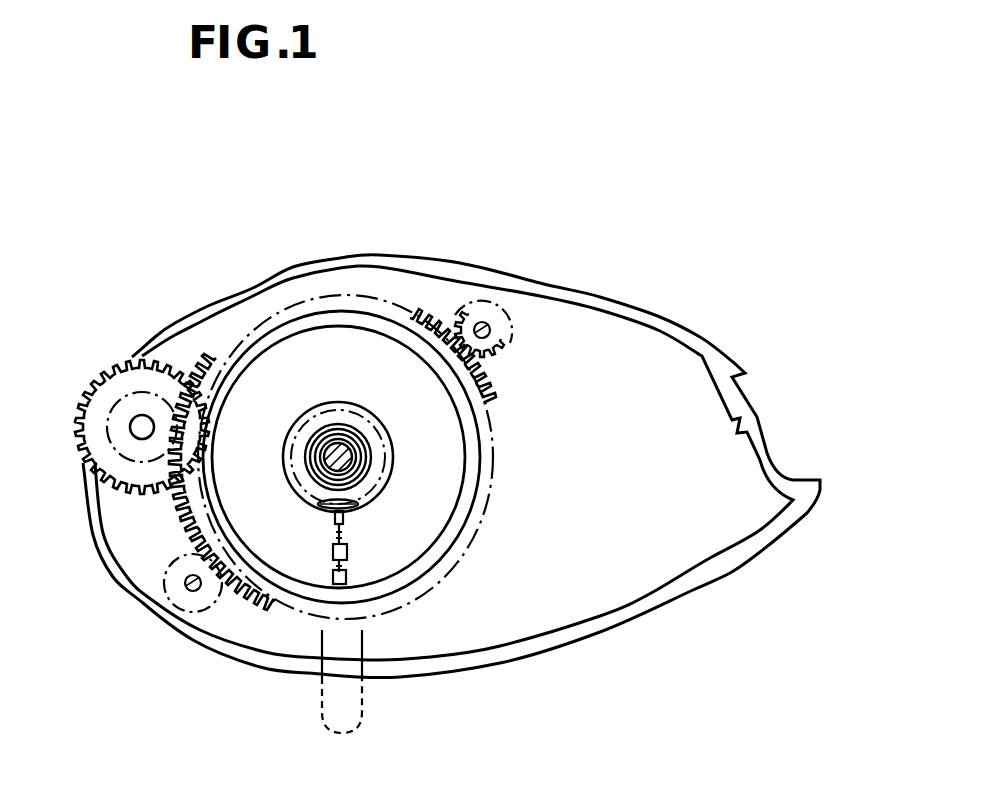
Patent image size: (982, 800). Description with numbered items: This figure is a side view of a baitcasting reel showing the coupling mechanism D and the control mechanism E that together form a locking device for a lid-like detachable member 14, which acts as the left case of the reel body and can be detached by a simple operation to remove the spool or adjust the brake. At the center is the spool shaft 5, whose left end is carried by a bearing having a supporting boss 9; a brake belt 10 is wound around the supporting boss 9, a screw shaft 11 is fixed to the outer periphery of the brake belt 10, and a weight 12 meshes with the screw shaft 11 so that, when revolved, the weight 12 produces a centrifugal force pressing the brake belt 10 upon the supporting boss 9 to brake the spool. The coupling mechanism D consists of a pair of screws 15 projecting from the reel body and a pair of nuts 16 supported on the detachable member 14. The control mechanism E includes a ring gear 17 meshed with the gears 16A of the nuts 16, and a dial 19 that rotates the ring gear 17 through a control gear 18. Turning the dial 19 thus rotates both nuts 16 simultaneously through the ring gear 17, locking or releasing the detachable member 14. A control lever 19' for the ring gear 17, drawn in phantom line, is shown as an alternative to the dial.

The detachable member 14 is at (635, 303).
The control mechanism E is at (198, 343).
The ring gear 17 is at (337, 295).
The dial 19 is at (142, 383).
The control gear 18 is at (172, 458).
The nuts 16 is at (497, 344).
The gears of the nuts 16A is at (451, 317).
The screws 15 is at (485, 327).
The coupling mechanism D is at (507, 370).
The supporting boss 9 is at (393, 465).
The spool shaft 5 is at (347, 437).
The brake belt 10 is at (356, 510).
The screw shaft 11 is at (334, 530).
The weight 12 is at (333, 553).
The control lever 19' is at (385, 688).